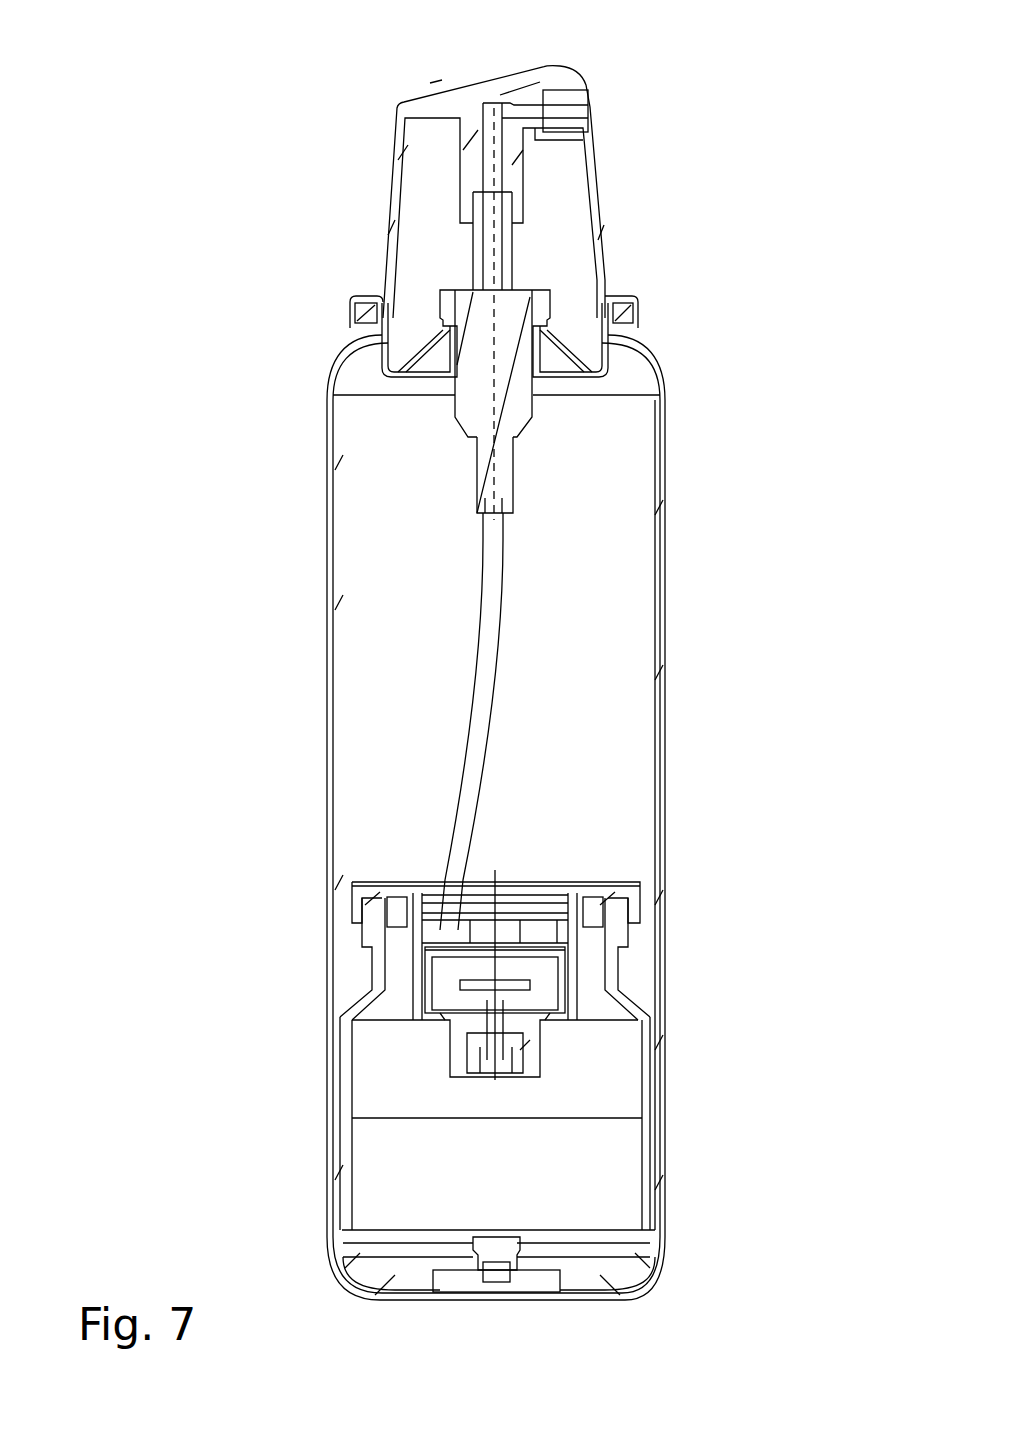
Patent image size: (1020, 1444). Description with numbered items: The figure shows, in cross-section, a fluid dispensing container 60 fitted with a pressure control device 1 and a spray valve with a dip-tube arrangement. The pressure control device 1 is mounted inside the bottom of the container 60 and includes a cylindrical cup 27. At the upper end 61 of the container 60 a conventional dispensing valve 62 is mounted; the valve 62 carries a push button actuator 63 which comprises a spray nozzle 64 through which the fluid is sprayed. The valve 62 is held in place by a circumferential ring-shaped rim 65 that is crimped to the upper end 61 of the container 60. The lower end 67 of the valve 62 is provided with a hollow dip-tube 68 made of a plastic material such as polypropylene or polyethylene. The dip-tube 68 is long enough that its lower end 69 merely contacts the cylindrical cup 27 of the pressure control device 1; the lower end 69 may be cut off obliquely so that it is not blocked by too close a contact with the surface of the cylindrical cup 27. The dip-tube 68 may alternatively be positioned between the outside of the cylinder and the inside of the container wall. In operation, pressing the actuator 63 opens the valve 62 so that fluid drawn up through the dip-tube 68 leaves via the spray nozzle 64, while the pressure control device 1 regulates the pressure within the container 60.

The pressure control device 1 is at (662, 1166).
The cylindrical cup 27 is at (556, 965).
The fluid dispensing container 60 is at (655, 525).
The upper end 61 is at (660, 327).
The dispensing valve 62 is at (455, 308).
The push button actuator 63 is at (473, 110).
The spray nozzle 64 is at (568, 100).
The ring-shaped rim 65 is at (352, 308).
The lower end of the valve 67 is at (475, 467).
The dip-tube 68 is at (482, 597).
The lower end of the dip-tube 69 is at (448, 934).